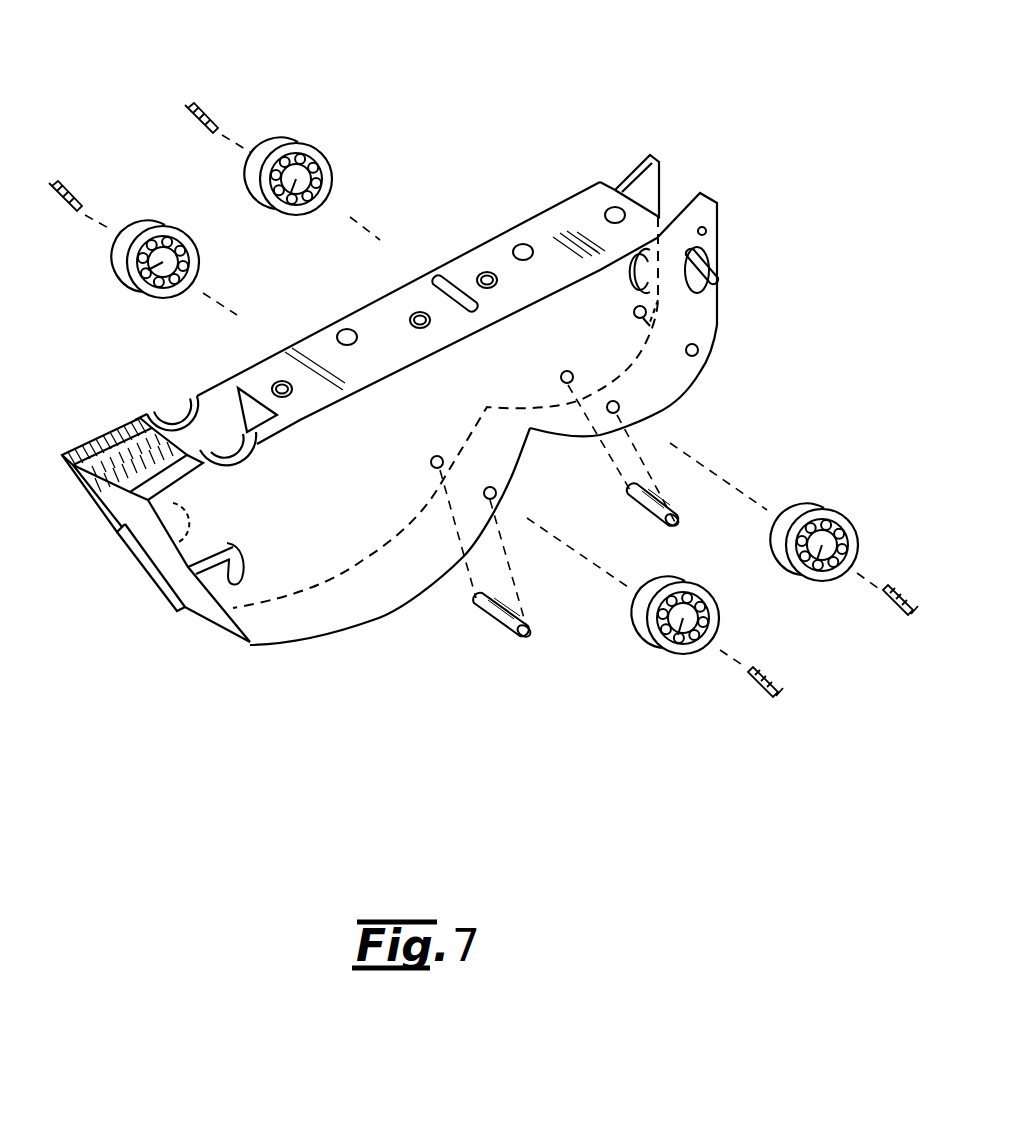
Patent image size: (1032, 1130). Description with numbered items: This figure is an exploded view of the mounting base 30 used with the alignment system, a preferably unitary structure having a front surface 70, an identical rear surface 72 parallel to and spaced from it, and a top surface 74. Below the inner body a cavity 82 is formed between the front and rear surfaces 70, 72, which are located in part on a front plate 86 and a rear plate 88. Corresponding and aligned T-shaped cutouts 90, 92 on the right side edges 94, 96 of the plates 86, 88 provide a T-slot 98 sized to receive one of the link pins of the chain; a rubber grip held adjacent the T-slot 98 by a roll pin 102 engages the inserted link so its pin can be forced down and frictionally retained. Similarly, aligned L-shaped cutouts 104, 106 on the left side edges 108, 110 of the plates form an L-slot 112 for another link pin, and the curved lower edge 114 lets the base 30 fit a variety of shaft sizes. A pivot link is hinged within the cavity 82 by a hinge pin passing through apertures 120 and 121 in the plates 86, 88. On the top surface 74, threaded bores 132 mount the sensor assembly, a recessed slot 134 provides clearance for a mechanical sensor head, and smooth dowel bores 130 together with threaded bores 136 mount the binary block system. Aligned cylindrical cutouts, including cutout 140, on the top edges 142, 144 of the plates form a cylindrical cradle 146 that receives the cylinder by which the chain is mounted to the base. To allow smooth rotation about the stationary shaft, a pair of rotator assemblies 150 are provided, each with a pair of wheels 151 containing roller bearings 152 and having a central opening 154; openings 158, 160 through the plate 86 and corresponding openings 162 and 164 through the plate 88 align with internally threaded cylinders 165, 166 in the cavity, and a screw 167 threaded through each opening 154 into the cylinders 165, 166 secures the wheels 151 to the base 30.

The mounting base 30 is at (483, 140).
The front surface 70 is at (644, 373).
The rear surface 72 is at (497, 232).
The top surface 74 is at (457, 262).
The cavity 82 is at (194, 617).
The front plate 86 is at (705, 313).
The rear plate 88 is at (633, 364).
The T-shaped cutout 90 is at (722, 282).
The T-shaped cutout 92 is at (662, 232).
The right side edge 94 is at (722, 300).
The right side edge 96 is at (633, 299).
The T-slot 98 is at (760, 211).
The roll pin 102 is at (706, 231).
The L-shaped cutout 104 is at (214, 556).
The L-shaped cutout 106 is at (200, 512).
The left side edge 108 is at (227, 630).
The left side edge 110 is at (73, 484).
The L-slot 112 is at (140, 588).
The lower edge 114 is at (348, 632).
The aperture 120 is at (698, 349).
The aperture 121 is at (676, 320).
The smooth dowel bores 130 is at (513, 252).
The threaded bores 132 is at (608, 205).
The recessed slot 134 is at (437, 283).
The threaded bores 136 is at (494, 283).
The cylindrical cutout 140 is at (163, 408).
The top edge 142 is at (212, 478).
The top edge 144 is at (107, 440).
The cylindrical cradle 146 is at (213, 452).
The rotator assembly 150 is at (350, 68).
The wheel 151 is at (165, 230).
The roller bearings 152 is at (150, 292).
The opening 154 is at (163, 262).
The opening 158 is at (495, 495).
The opening 160 is at (620, 407).
The opening 162 is at (433, 459).
The opening 164 is at (560, 375).
The internally threaded cylinder 165 is at (490, 626).
The internally threaded cylinder 166 is at (640, 504).
The screw 167 is at (198, 104).